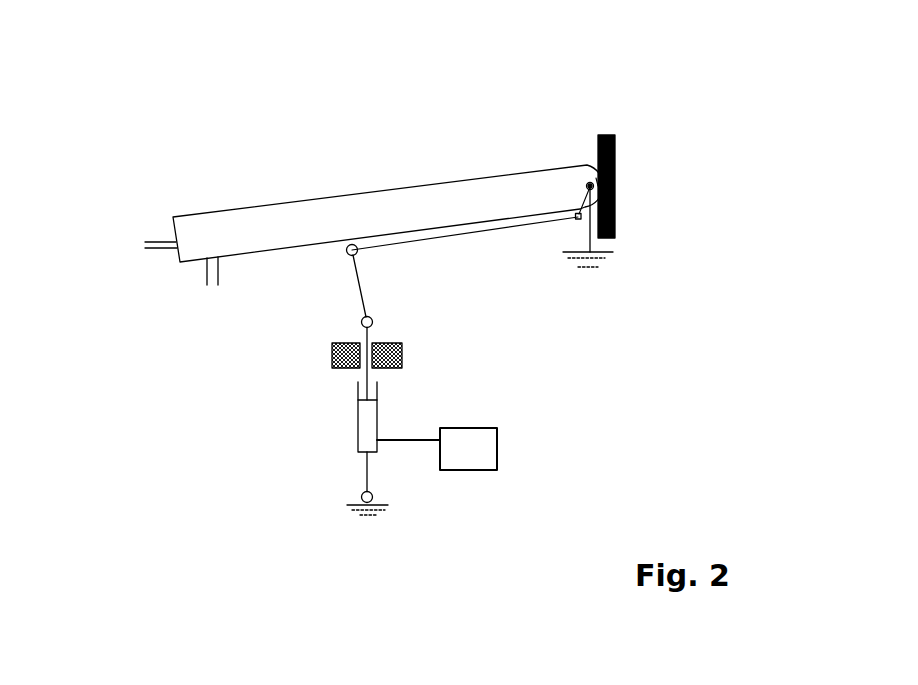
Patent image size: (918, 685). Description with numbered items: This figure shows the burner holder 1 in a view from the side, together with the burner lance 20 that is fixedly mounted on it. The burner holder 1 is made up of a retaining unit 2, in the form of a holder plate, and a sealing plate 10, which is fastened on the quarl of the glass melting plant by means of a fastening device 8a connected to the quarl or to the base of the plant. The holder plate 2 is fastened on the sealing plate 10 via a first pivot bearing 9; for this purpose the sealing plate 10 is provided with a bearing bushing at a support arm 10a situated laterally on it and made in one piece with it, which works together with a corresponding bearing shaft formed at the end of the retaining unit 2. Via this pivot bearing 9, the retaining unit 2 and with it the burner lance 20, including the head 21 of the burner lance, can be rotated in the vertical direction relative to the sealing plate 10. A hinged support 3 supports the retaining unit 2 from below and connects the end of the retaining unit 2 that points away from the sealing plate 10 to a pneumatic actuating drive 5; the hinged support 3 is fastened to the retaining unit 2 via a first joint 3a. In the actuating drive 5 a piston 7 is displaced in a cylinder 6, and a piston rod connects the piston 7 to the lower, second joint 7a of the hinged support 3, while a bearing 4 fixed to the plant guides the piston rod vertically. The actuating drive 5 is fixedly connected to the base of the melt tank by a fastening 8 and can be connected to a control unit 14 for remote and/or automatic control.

The burner holder 1 is at (625, 410).
The retaining unit 2 is at (440, 236).
The hinged support 3 is at (359, 283).
The first joint 3a is at (347, 254).
The bearing 4 is at (332, 360).
The actuating drive 5 is at (397, 413).
The cylinder 6 is at (358, 450).
The piston 7 is at (366, 402).
The second joint 7a is at (372, 316).
The fastening 8 is at (361, 499).
The fastening device 8a is at (592, 252).
The pivot bearing 9 is at (589, 186).
The sealing plate 10 is at (616, 153).
The support arm 10a is at (590, 183).
The control unit 14 is at (470, 470).
The burner lance 20 is at (300, 222).
The head of the burner lance 21 is at (591, 183).